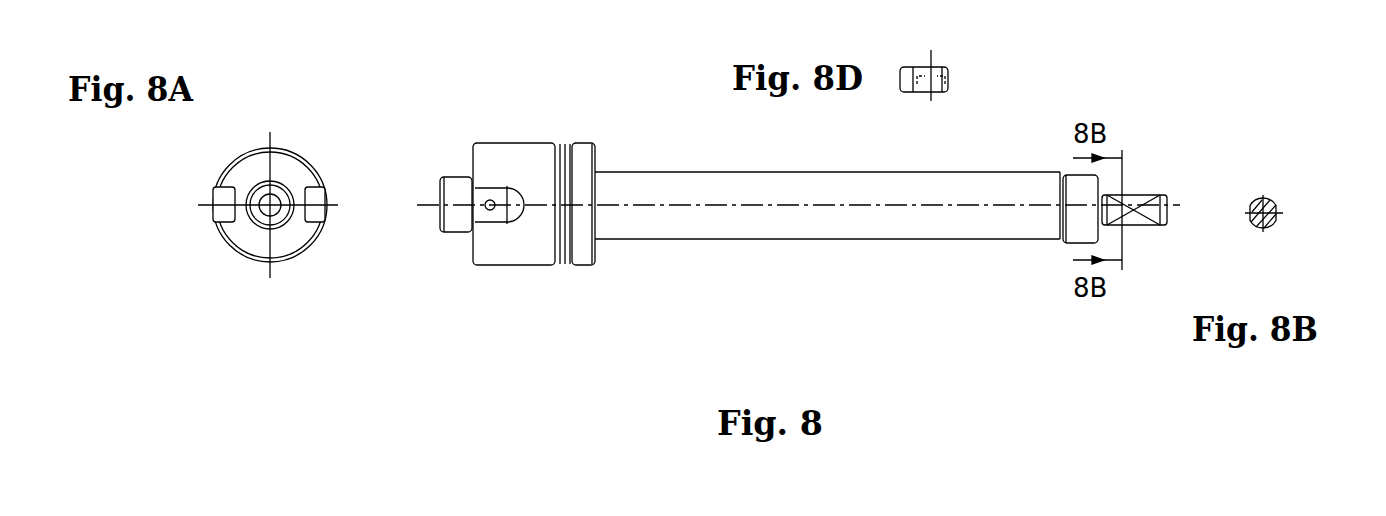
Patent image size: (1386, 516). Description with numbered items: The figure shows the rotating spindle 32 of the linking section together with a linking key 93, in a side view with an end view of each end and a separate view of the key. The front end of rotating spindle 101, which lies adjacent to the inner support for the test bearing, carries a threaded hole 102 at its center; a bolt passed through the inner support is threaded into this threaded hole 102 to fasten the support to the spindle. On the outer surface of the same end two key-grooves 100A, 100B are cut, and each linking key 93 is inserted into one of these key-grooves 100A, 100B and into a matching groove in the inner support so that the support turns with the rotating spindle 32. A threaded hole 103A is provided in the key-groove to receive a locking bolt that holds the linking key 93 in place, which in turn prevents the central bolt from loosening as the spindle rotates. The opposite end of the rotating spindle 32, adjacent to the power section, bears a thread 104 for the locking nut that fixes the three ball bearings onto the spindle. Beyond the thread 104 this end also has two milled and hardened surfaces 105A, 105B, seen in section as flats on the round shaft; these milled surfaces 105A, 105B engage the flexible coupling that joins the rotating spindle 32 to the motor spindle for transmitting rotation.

In FIG. 8, the rotating spindle 32 is at (853, 240).
In FIG. 8D, the linking key 93 is at (940, 65).
In FIG. 8A, the key-groove 100A is at (317, 198).
In FIG. 8, the key-groove 100A is at (510, 188).
In FIG. 8A, the key-groove 100B is at (221, 195).
In FIG. 8A, the front end of rotating spindle 101 is at (280, 225).
In FIG. 8, the front end of rotating spindle 101 is at (455, 225).
In FIG. 8A, the threaded hole 102 is at (265, 215).
In FIG. 8, the threaded hole 103A is at (490, 210).
In FIG. 8, the thread 104 is at (1067, 238).
In FIG. 8, the milled surface 105A is at (1137, 210).
In FIG. 8B, the milled surface 105A is at (1252, 217).
In FIG. 8B, the milled surface 105B is at (1278, 217).